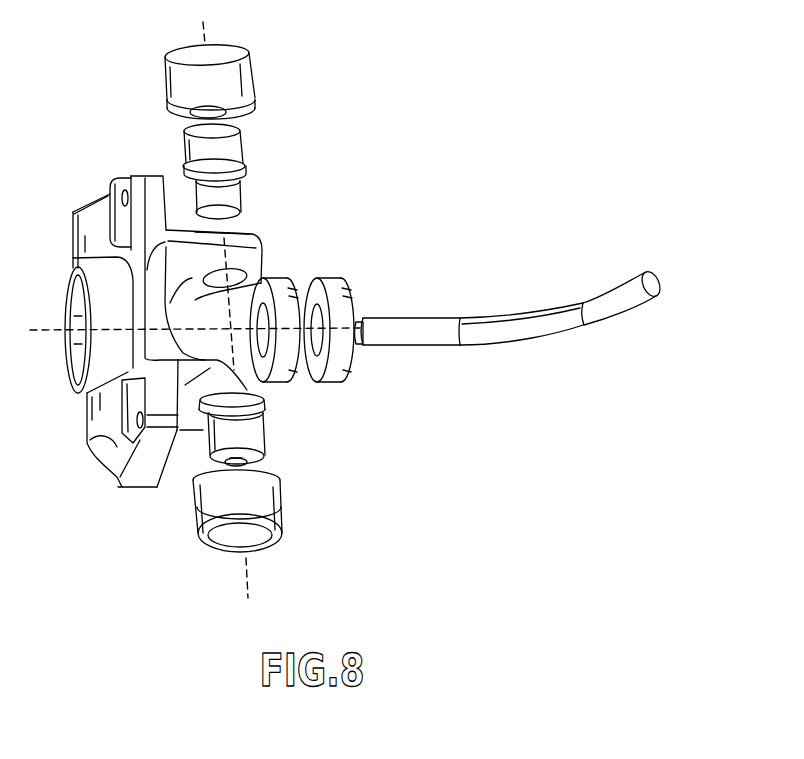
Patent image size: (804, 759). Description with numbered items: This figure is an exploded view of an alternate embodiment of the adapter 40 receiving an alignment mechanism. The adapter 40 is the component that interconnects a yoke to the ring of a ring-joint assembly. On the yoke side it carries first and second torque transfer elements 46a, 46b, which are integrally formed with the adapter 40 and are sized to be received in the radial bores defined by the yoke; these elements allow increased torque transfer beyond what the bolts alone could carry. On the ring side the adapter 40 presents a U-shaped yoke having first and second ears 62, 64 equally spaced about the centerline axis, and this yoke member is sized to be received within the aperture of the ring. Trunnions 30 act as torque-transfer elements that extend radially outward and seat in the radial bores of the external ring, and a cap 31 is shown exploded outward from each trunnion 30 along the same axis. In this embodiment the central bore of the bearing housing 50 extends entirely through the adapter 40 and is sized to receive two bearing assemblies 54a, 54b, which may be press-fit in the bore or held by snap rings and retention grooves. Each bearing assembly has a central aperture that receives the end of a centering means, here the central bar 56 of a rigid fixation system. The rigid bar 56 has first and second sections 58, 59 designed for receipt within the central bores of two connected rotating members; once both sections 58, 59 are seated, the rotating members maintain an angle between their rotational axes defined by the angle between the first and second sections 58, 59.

The adapter 40 is at (167, 331).
The first torque transfer element 46a is at (76, 218).
The second torque transfer element 46b is at (97, 428).
The bearing housing 50 is at (92, 278).
The cap 31 is at (233, 84).
The trunnion 30 is at (226, 154).
The first ear 62 is at (258, 227).
The second ear 64 is at (263, 393).
The first bearing assembly 54a is at (284, 276).
The second bearing assembly 54b is at (332, 275).
The first section 58 is at (398, 327).
The central bar 56 is at (493, 315).
The second section 59 is at (627, 285).